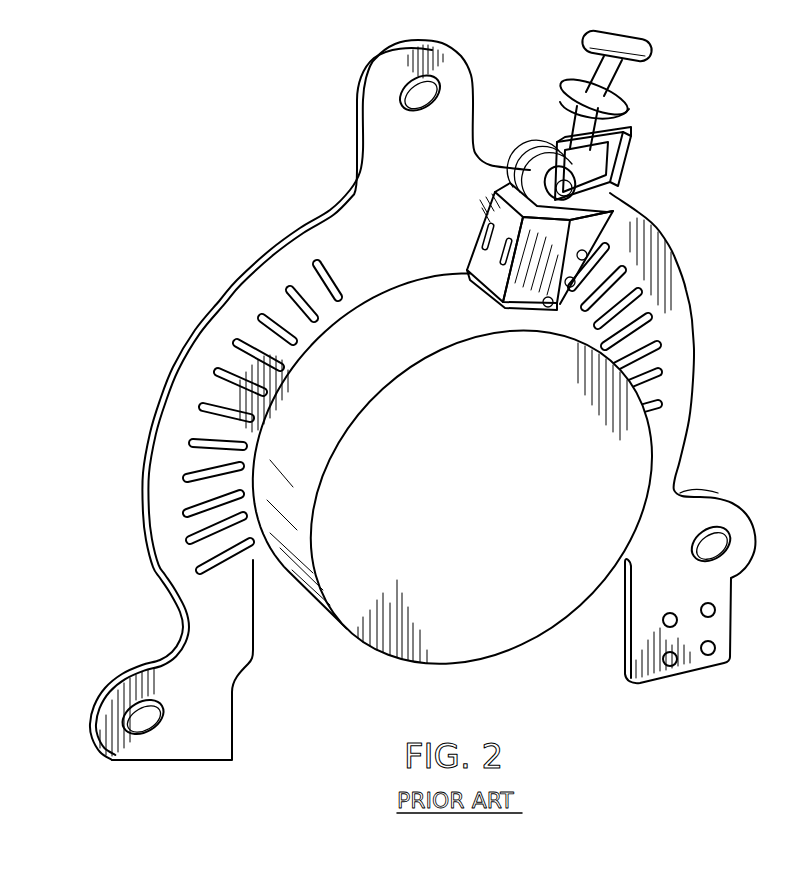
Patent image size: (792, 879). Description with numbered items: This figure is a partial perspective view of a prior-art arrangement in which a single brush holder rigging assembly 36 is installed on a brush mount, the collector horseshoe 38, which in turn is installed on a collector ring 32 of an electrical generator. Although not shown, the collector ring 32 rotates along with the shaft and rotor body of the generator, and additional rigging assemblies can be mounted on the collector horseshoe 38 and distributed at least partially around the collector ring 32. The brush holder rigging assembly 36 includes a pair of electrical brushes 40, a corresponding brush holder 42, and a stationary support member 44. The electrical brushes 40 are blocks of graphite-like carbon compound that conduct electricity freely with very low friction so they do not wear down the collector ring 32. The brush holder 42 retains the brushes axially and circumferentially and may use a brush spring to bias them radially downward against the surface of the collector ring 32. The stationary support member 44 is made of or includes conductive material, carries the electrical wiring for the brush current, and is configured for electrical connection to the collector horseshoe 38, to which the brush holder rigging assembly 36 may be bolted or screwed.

The collector ring 32 is at (499, 522).
The brush holder rigging assembly 36 is at (563, 169).
The collector horseshoe 38 is at (438, 228).
The electrical brushes 40 is at (503, 182).
The brush holder 42 is at (480, 262).
The stationary support member 44 is at (603, 190).